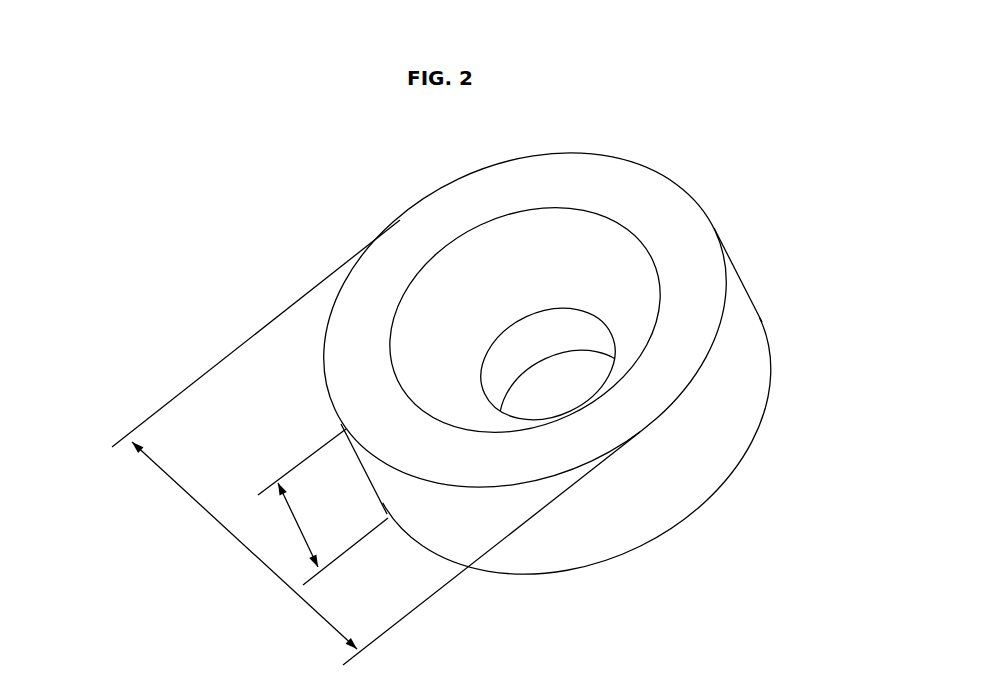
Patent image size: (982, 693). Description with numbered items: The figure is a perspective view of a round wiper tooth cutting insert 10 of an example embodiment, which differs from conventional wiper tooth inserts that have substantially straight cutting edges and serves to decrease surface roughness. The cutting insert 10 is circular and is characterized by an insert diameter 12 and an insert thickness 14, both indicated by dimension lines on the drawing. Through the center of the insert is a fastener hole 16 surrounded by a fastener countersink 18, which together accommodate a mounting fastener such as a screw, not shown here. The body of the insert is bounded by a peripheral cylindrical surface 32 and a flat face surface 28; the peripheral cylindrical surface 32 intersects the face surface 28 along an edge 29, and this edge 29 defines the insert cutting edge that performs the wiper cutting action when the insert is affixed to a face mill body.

The round cutting insert 10 is at (312, 208).
The insert diameter 12 is at (263, 567).
The insert thickness 14 is at (290, 519).
The fastener hole 16 is at (548, 340).
The fastener countersink 18 is at (492, 273).
The face surface 28 is at (688, 252).
The edge 29 is at (708, 353).
The peripheral cylindrical surface 32 is at (538, 538).